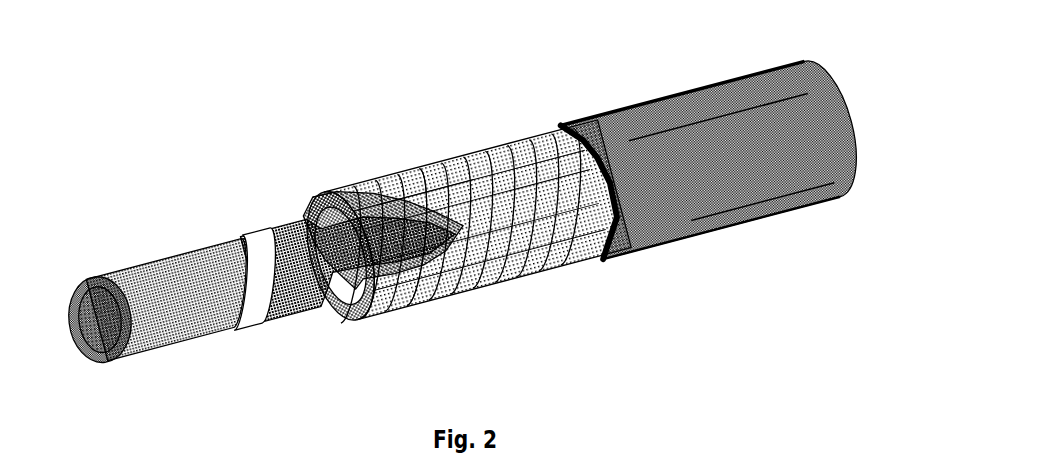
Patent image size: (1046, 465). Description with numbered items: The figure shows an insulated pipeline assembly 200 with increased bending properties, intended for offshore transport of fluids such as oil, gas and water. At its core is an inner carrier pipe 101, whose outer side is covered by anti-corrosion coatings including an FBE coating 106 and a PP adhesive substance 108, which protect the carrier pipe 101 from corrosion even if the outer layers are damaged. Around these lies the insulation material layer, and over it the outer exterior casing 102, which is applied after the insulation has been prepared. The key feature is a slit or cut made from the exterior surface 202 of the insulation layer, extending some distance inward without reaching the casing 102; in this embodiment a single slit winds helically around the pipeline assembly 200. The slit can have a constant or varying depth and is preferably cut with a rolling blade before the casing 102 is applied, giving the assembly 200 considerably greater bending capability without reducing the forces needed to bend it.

The inner carrier pipe 101 is at (150, 268).
The outer exterior casing 102 is at (770, 67).
The FBE coating 106 is at (253, 252).
The PP adhesive substance 108 is at (275, 233).
The pipeline assembly 200 is at (461, 193).
The exterior surface 202 is at (463, 209).